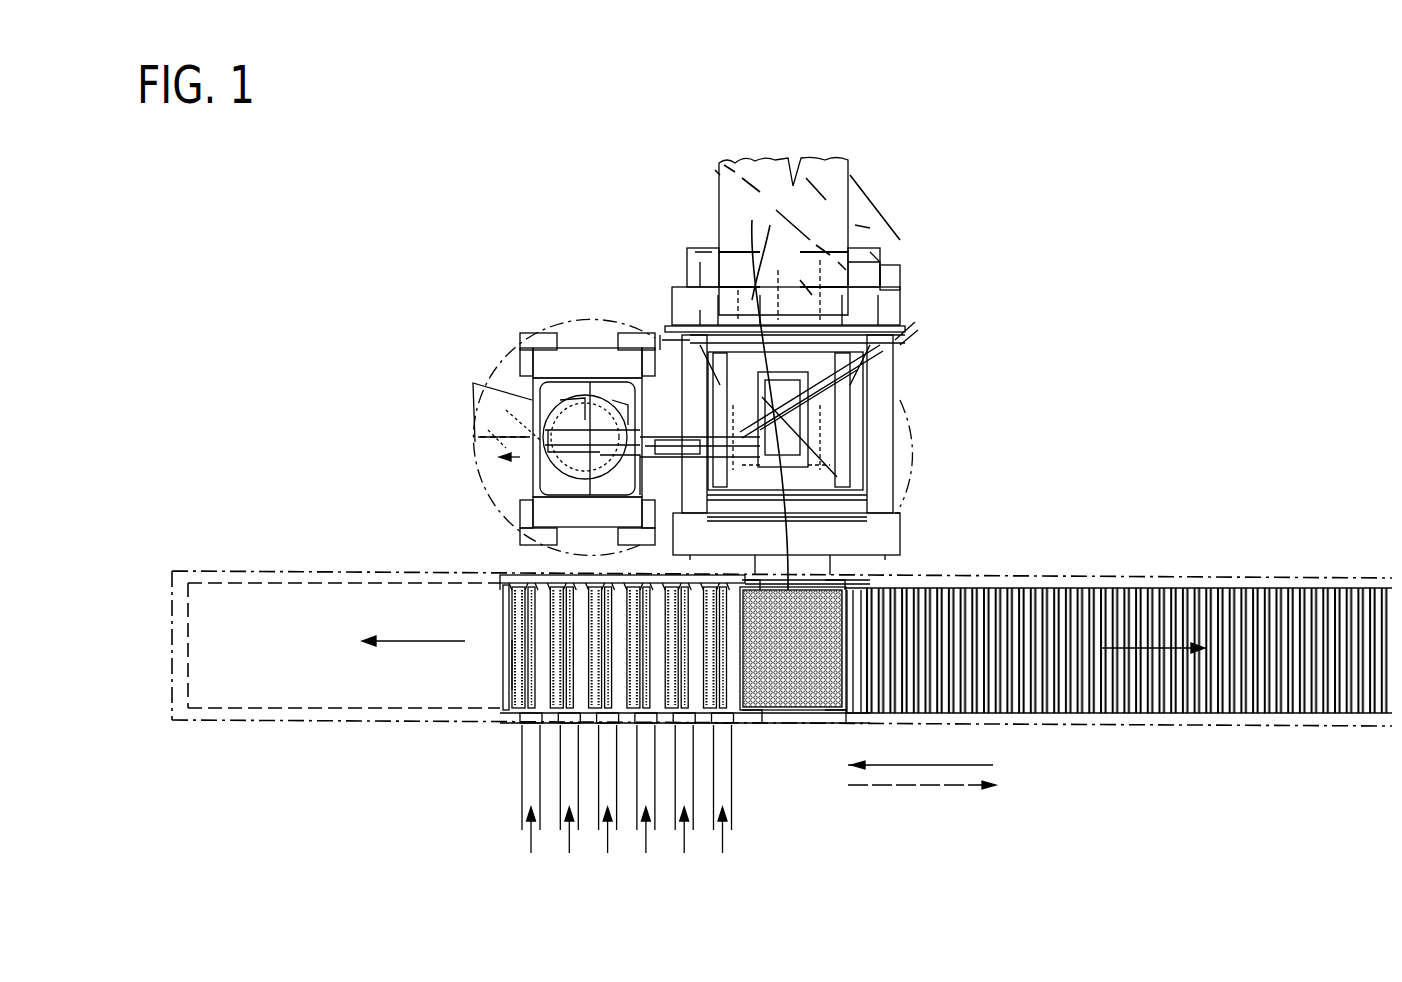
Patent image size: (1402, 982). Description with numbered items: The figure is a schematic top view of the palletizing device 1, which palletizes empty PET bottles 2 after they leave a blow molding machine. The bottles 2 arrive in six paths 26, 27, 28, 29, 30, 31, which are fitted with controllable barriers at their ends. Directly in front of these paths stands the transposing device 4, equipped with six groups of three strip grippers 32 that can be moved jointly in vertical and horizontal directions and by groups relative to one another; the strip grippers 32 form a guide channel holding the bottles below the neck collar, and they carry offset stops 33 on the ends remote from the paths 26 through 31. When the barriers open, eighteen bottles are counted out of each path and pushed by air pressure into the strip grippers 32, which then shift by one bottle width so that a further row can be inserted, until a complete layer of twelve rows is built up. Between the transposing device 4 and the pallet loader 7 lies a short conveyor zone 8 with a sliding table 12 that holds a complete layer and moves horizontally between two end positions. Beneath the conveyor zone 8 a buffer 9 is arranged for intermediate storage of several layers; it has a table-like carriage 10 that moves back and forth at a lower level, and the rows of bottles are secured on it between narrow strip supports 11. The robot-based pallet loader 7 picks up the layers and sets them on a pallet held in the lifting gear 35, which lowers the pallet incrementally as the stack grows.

The device 1 is at (1124, 342).
The bottles 2 is at (824, 727).
The transposing device 4 is at (508, 752).
The pallet loader 7 is at (607, 400).
The conveyor zone 8 is at (766, 762).
The buffer 9 is at (1106, 572).
The carriage 10 is at (1108, 707).
The supports 11 is at (1187, 597).
The sliding table 12 is at (792, 725).
The path 26 is at (527, 729).
The path 27 is at (565, 729).
The path 28 is at (604, 729).
The path 29 is at (642, 729).
The path 30 is at (680, 729).
The path 31 is at (719, 729).
The strip grippers 32 is at (510, 684).
The offset stops 33 is at (505, 590).
The lifting gear 35 is at (874, 424).